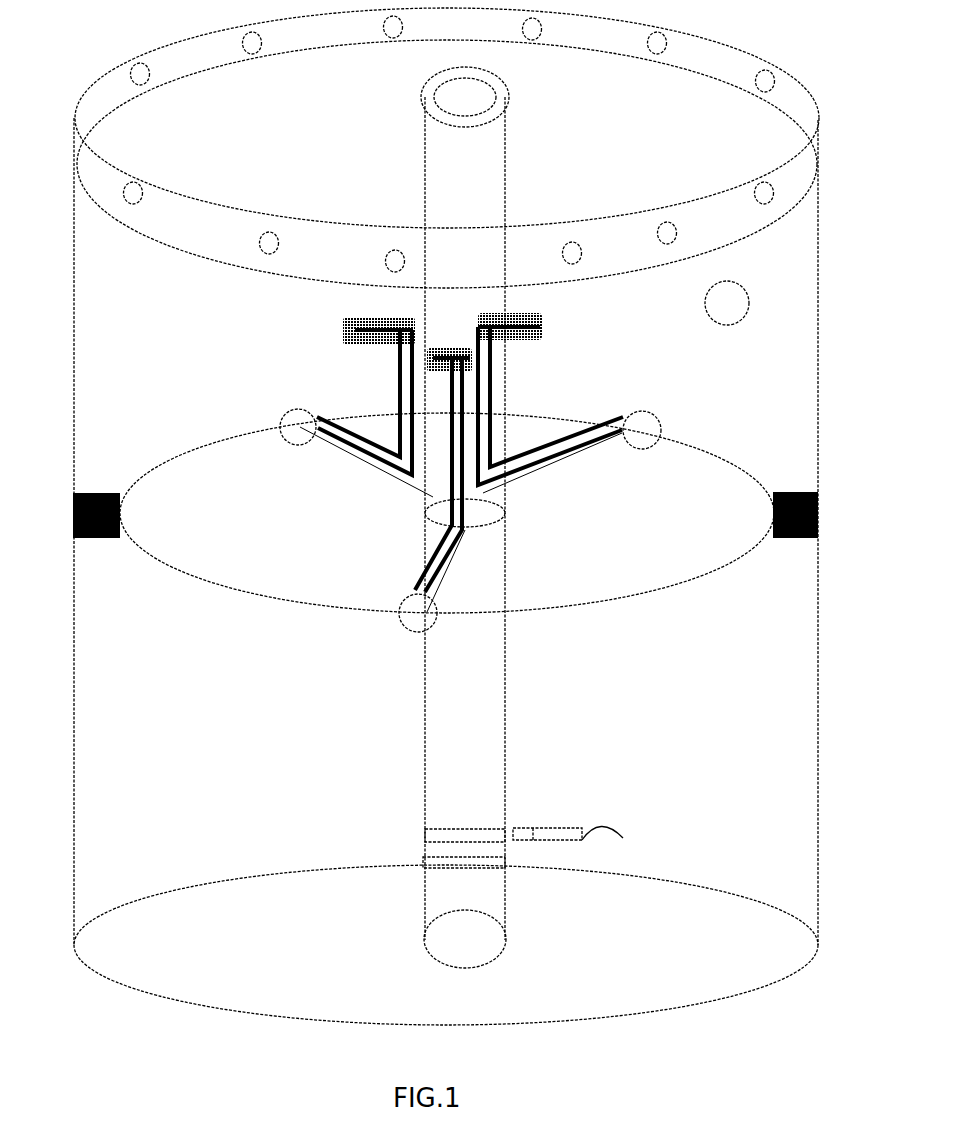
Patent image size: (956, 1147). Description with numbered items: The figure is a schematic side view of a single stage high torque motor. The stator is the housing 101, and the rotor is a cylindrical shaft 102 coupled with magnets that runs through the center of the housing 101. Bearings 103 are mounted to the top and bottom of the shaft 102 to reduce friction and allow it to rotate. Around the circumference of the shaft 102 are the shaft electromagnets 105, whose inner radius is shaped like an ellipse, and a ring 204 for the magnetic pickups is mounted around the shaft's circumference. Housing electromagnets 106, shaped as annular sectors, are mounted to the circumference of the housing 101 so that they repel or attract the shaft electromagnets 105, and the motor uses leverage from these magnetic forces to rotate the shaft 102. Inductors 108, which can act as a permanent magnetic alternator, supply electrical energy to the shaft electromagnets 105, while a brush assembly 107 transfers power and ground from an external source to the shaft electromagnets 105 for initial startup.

The housing 101 is at (818, 241).
The cylindrical shaft 102 is at (506, 197).
The bearings 103 is at (510, 99).
The shaft electromagnets 105 is at (398, 598).
The housing electromagnets 106 is at (73, 515).
The brush assembly 107 is at (627, 836).
The inductors 108 is at (497, 382).
The ring for the magnetic pickups 204 is at (700, 583).